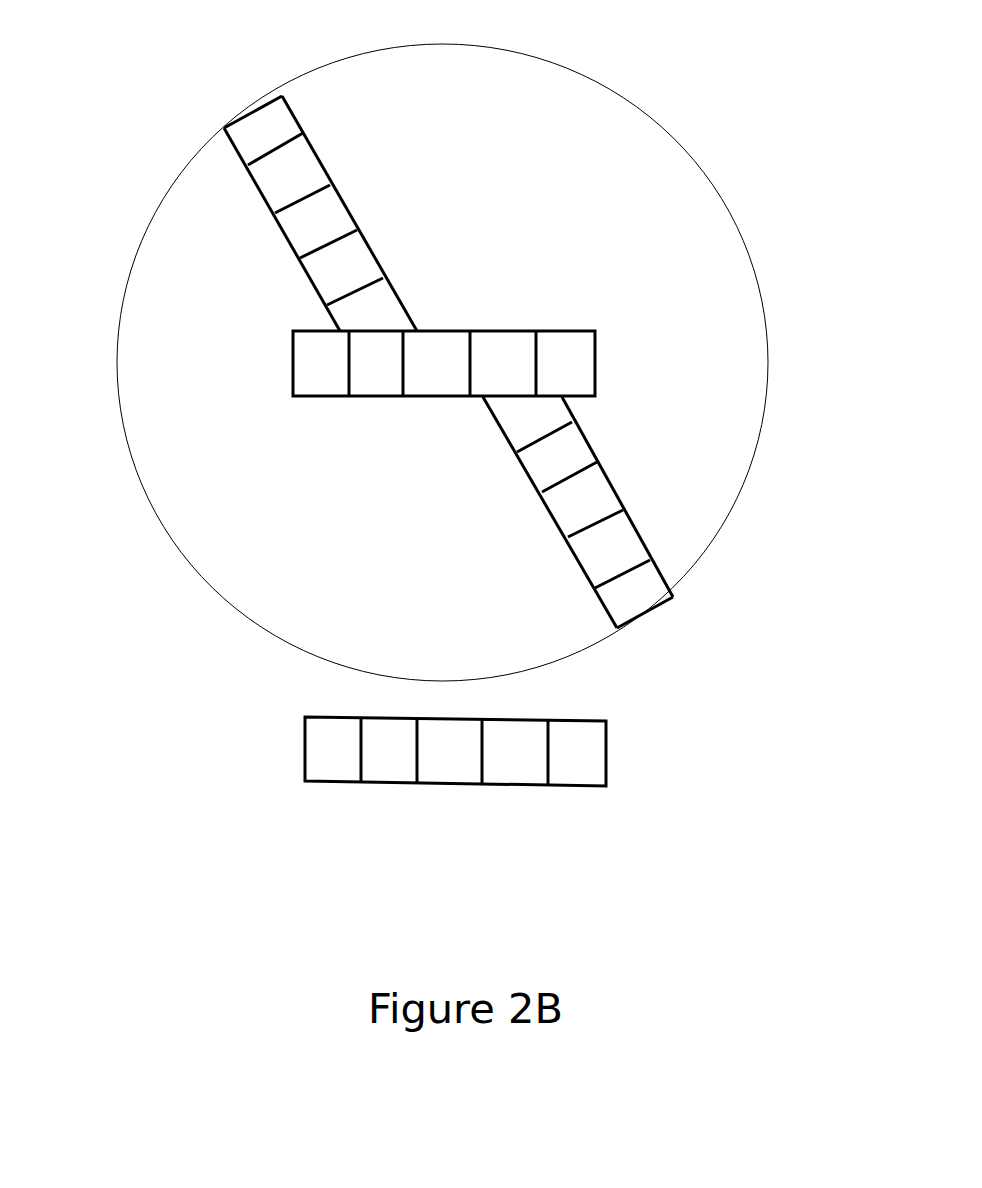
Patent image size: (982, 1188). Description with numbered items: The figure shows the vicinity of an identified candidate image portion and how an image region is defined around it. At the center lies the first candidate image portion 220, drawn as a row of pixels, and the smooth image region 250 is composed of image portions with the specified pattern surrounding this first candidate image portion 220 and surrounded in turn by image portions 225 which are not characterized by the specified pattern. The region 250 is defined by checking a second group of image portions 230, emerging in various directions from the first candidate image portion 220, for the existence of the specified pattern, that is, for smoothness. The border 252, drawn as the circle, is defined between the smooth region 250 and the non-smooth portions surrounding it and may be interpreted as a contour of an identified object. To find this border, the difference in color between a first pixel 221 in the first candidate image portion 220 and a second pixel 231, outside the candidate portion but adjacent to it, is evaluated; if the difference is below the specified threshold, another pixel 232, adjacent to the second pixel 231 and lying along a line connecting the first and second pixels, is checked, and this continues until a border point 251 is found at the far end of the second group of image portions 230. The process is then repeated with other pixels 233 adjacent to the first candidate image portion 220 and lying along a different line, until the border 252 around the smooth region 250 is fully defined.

The image region 250 is at (185, 68).
The border point 251 is at (245, 110).
The second group of image portions 230 is at (343, 197).
The another pixel 232 is at (332, 282).
The second pixel 231 is at (350, 318).
The first candidate image portion 220 is at (502, 338).
The first pixel 221 is at (377, 359).
The other pixels 233 is at (513, 435).
The border 252 is at (715, 468).
The image portions 225 is at (514, 723).